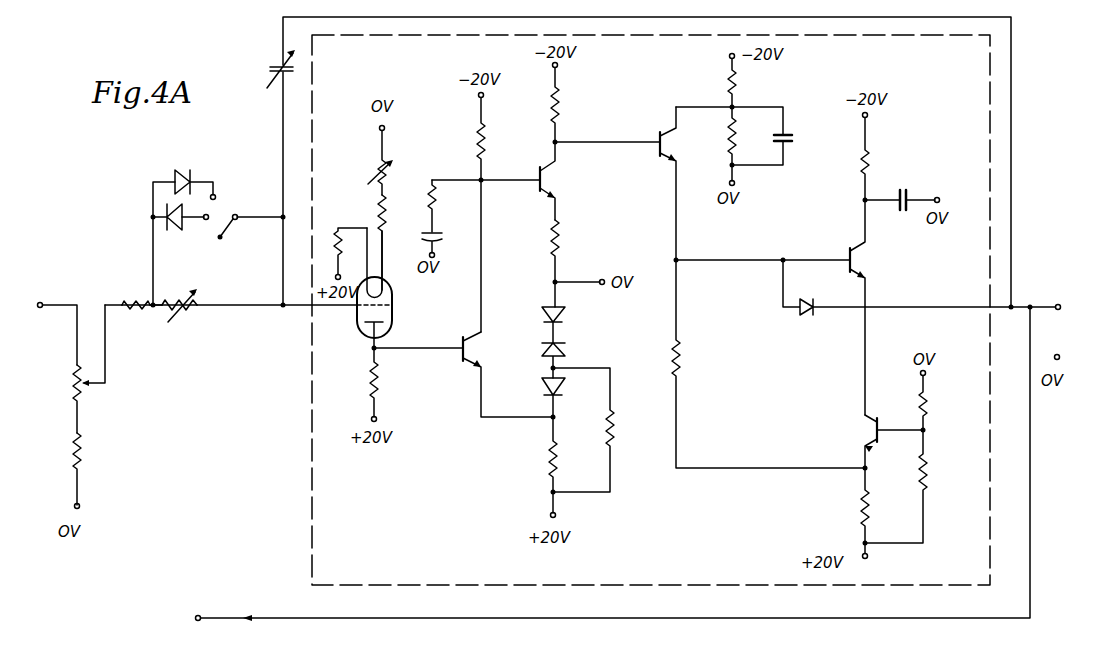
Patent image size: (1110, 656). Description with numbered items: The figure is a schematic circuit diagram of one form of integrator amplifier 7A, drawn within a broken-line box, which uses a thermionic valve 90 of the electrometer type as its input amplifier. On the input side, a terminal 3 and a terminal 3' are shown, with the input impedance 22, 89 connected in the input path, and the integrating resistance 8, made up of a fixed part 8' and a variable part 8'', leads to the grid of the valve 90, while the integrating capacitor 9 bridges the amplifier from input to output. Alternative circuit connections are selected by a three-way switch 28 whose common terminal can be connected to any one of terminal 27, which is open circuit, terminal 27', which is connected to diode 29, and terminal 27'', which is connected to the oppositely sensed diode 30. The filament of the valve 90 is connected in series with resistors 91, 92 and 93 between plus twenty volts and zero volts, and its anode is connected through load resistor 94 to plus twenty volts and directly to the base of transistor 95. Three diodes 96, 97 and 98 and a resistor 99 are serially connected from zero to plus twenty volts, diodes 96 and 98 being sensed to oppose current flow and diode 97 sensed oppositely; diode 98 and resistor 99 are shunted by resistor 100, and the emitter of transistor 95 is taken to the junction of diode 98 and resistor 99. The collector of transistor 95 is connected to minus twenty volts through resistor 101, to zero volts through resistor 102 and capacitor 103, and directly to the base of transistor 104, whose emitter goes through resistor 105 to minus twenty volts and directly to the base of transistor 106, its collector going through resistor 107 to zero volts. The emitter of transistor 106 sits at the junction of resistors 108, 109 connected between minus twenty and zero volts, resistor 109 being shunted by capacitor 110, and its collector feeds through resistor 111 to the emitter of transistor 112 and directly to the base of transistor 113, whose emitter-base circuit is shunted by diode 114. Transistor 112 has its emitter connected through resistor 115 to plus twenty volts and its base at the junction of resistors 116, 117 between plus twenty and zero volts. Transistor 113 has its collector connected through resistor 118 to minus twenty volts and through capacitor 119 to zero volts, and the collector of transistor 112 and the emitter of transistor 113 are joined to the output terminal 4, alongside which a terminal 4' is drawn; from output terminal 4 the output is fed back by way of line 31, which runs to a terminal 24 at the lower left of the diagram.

The input terminal 3 is at (55, 318).
The input reference terminal 3' is at (92, 503).
The output terminal 4 is at (1044, 292).
The output reference terminal 4' is at (1070, 359).
The integrator amplifier 7A is at (975, 137).
The integrating resistance 8 is at (159, 289).
The fixed part 8' is at (136, 322).
The variable part 8'' is at (184, 316).
The integrating capacitor 9 is at (273, 66).
The input impedance 22 is at (70, 382).
The feedback terminal 24 is at (198, 615).
The terminal 27 is at (226, 243).
The terminal 27' is at (199, 234).
The terminal 27'' is at (236, 181).
The three-way switch 28 is at (237, 215).
The diode 29 is at (177, 232).
The diode 30 is at (182, 168).
The line 31 is at (952, 617).
The input impedance 89 is at (84, 450).
The thermionic valve 90 is at (393, 314).
The resistor 91 is at (333, 229).
The resistor 92 is at (388, 212).
The resistor 93 is at (392, 174).
The load resistor 94 is at (379, 389).
The transistor 95 is at (460, 357).
The diode 96 is at (565, 313).
The diode 97 is at (567, 350).
The diode 98 is at (563, 388).
The resistor 99 is at (548, 455).
The resistor 100 is at (614, 433).
The resistor 101 is at (489, 142).
The resistor 102 is at (440, 194).
The capacitor 103 is at (439, 241).
The transistor 104 is at (537, 188).
The resistor 105 is at (562, 110).
The transistor 106 is at (657, 138).
The resistor 107 is at (559, 246).
The resistor 108 is at (736, 82).
The resistor 109 is at (727, 143).
The capacitor 110 is at (788, 133).
The resistor 111 is at (681, 370).
The transistor 112 is at (892, 412).
The transistor 113 is at (847, 256).
The diode 114 is at (813, 313).
The resistor 115 is at (869, 508).
The resistor 116 is at (928, 478).
The resistor 117 is at (927, 405).
The resistor 118 is at (874, 167).
The capacitor 119 is at (910, 195).